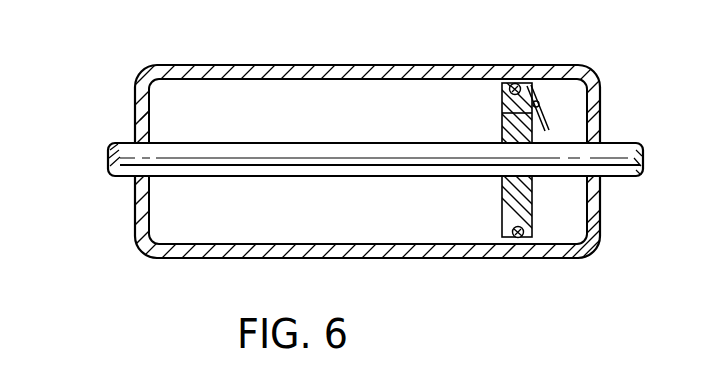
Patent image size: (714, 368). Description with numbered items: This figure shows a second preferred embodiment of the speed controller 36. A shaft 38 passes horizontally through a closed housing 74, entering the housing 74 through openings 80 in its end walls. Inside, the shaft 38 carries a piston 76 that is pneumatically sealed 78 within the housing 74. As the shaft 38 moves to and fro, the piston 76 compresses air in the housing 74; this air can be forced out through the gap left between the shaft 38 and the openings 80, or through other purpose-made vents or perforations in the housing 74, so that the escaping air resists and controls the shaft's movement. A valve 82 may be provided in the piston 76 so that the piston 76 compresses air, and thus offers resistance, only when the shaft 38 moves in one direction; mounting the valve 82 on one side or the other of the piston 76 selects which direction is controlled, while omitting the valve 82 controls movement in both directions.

The controller 36 is at (141, 301).
The shaft 38 is at (314, 151).
The housing 74 is at (372, 151).
The piston 76 is at (508, 205).
The pneumatic seal 78 is at (520, 84).
The openings 80 is at (133, 142).
The valve 82 is at (546, 106).